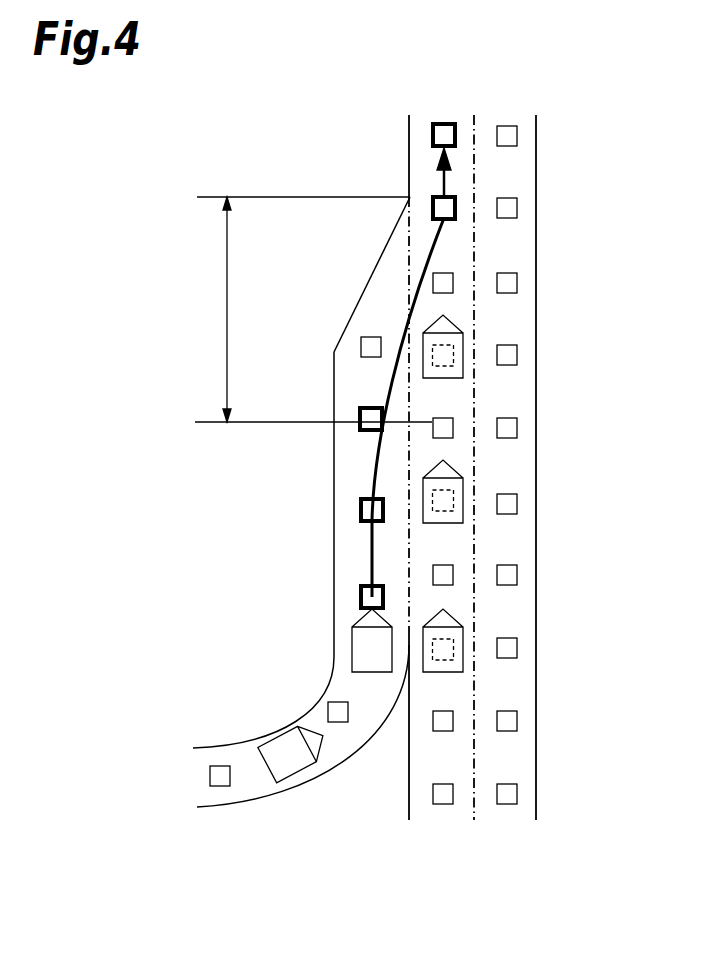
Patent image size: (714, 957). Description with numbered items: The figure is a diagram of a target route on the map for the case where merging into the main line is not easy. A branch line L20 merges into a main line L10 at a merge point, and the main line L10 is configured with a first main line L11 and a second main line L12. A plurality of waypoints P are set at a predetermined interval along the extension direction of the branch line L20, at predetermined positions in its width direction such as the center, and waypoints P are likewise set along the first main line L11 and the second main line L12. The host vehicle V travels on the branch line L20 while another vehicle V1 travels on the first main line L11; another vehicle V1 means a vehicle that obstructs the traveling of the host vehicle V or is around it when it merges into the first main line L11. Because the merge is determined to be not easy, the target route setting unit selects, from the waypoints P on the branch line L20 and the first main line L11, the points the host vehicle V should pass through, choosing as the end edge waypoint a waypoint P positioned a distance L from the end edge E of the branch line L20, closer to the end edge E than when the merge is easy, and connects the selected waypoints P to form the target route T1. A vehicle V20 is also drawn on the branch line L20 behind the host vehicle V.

The end edge E is at (410, 197).
The waypoint P is at (518, 210).
The another vehicle V1 is at (464, 372).
The target route T1 is at (372, 558).
The host vehicle V is at (352, 656).
The vehicle on curved road V20 is at (294, 785).
The branch line L20 is at (212, 802).
The first main line L11 is at (436, 807).
The second main line L12 is at (507, 807).
The main line L10 is at (532, 879).